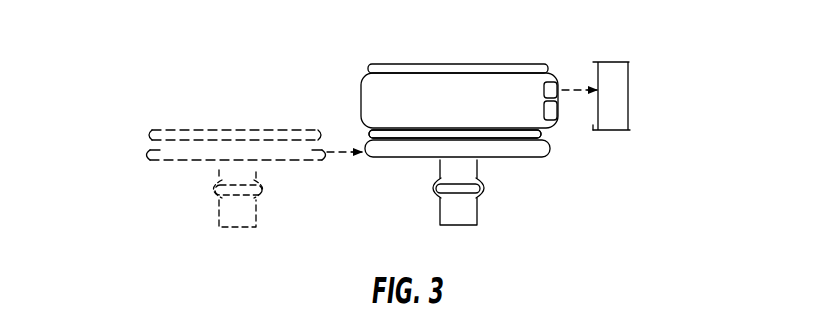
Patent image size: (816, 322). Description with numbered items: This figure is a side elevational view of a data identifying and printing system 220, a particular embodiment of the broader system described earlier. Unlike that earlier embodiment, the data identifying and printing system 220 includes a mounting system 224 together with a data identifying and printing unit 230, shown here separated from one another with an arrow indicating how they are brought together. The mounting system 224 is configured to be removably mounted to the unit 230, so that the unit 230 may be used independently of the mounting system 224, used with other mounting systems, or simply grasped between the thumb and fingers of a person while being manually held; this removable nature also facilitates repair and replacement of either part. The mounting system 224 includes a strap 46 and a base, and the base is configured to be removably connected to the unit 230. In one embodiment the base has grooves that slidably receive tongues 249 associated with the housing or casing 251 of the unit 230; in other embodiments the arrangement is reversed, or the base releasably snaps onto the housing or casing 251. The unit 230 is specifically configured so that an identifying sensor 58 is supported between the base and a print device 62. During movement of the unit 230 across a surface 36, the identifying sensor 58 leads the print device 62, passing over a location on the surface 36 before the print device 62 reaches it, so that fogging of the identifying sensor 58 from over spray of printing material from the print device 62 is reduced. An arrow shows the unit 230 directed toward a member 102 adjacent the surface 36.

The data identifying and printing system 220 is at (291, 148).
The mounting system 224 is at (148, 129).
The strap 46 is at (257, 213).
The data identifying and printing unit 230 is at (472, 120).
The tongues 249 is at (443, 65).
The housing or casing 251 is at (400, 120).
The print device 62 is at (558, 82).
The identifying sensor 58 is at (558, 123).
The receiving member 102 is at (628, 78).
The surface 36 is at (594, 130).